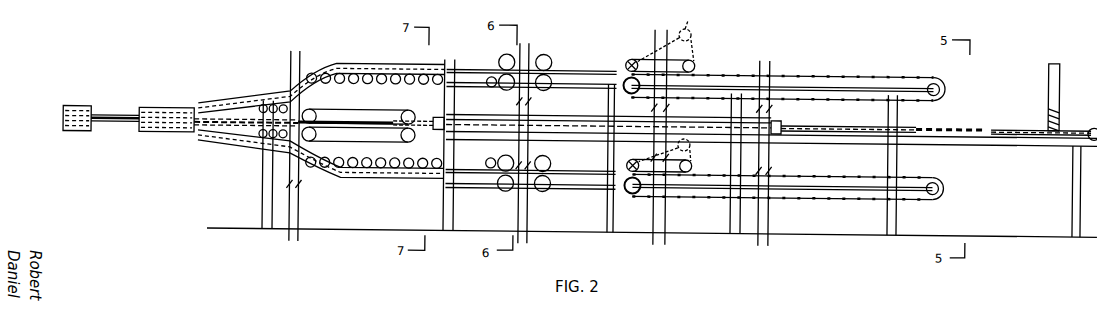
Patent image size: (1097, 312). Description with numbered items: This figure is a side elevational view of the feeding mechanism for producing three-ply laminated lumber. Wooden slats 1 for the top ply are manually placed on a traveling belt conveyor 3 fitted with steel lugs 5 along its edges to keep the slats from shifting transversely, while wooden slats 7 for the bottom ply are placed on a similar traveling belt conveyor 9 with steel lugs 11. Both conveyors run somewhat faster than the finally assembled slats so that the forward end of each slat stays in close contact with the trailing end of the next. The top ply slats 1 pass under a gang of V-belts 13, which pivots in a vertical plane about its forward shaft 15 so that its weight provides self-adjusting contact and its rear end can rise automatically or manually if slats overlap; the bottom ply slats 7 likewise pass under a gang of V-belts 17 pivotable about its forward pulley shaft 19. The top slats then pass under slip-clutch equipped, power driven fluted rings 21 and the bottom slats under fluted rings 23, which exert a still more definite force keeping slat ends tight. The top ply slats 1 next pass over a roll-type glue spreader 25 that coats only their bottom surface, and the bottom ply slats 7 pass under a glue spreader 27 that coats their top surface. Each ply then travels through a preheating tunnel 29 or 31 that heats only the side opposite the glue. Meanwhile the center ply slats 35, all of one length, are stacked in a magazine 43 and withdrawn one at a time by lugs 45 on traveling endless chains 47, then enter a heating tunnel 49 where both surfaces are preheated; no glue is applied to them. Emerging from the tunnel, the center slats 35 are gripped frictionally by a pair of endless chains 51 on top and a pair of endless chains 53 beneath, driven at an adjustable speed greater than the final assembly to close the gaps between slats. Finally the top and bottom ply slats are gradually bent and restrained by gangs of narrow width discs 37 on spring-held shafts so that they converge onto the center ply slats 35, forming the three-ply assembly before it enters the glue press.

The wooden slats for top ply 1 is at (97, 113).
The traveling belt conveyor 3 is at (908, 70).
The steel lugs 5 is at (875, 70).
The wooden slats for bottom ply 7 is at (107, 125).
The traveling belt conveyor 9 is at (922, 198).
The steel lugs 11 is at (863, 195).
The gang of V-belts 13 is at (678, 54).
The forward shaft 15 is at (626, 55).
The gang of V-belts 17 is at (682, 156).
The forward pulley shaft 19 is at (632, 157).
The fluted rings 21 is at (548, 56).
The fluted rings 23 is at (550, 156).
The glue spreader 25 is at (505, 86).
The glue spreader 27 is at (503, 154).
The preheating tunnel 29 is at (327, 62).
The preheating tunnel 31 is at (308, 172).
The center ply slats 35 is at (113, 115).
The narrow width discs 37 is at (327, 81).
The magazine 43 is at (1058, 81).
The lugs 45 is at (962, 119).
The traveling endless chains 47 is at (442, 140).
The heating tunnel 49 is at (552, 111).
The endless chains 51 is at (378, 108).
The endless chains 53 is at (375, 140).